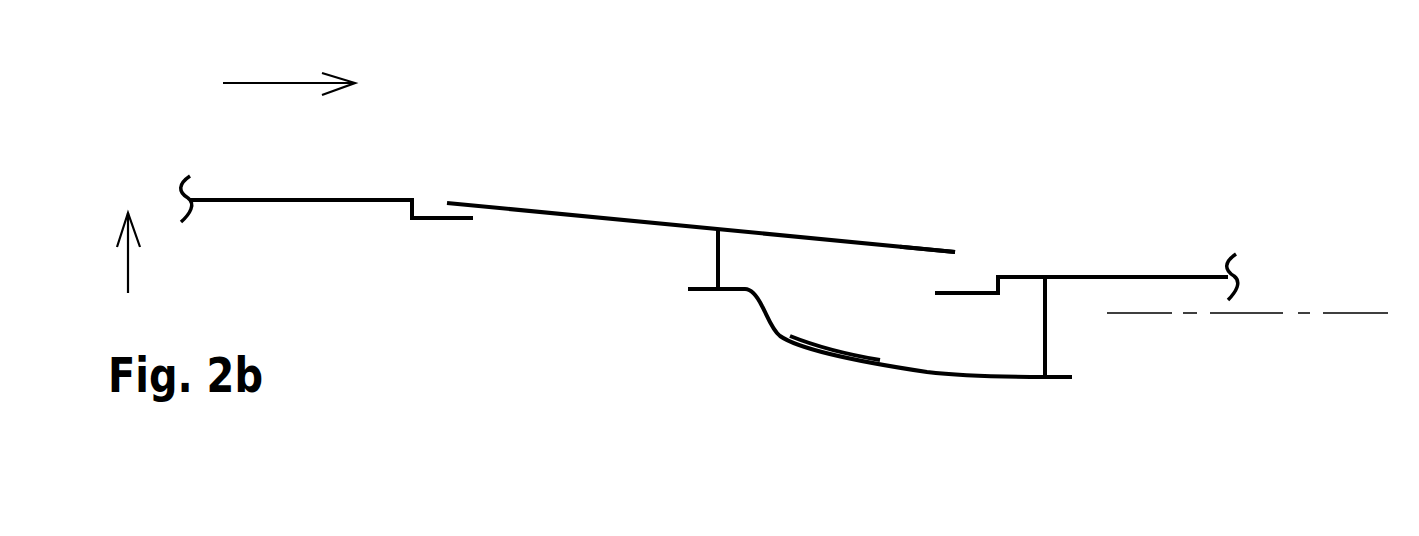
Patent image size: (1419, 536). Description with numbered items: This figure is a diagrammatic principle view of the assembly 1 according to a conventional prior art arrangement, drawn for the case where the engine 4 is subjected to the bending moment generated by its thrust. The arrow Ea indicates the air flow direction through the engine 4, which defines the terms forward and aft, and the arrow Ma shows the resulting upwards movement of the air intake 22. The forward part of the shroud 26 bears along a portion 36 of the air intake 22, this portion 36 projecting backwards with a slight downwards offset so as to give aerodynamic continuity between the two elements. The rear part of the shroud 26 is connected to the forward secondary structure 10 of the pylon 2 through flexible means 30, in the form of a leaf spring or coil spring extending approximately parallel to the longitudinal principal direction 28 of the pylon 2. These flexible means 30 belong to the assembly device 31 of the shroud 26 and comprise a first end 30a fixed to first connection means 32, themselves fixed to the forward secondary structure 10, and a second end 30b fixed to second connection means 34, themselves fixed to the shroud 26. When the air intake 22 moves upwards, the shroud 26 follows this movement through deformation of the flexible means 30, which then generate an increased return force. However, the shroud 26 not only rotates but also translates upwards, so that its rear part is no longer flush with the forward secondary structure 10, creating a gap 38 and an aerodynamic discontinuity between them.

The assembly 1 is at (780, 182).
The pylon 2 is at (1076, 262).
The engine 4 is at (233, 192).
The forward secondary structure 10 is at (1133, 275).
The air intake 22 is at (313, 200).
The shroud 26 is at (628, 227).
The longitudinal principal direction 28 is at (925, 248).
The flexible means 30 is at (924, 376).
The first end 30a is at (1057, 378).
The second end 30b is at (700, 290).
The assembly device 31 is at (806, 366).
The first connection means 32 is at (1047, 328).
The second connection means 34 is at (717, 262).
The portion of the air intake 36 is at (430, 217).
The gap 38 is at (988, 261).
The air flow direction arrow Ea is at (283, 83).
The upwards movement arrow Ma is at (128, 260).